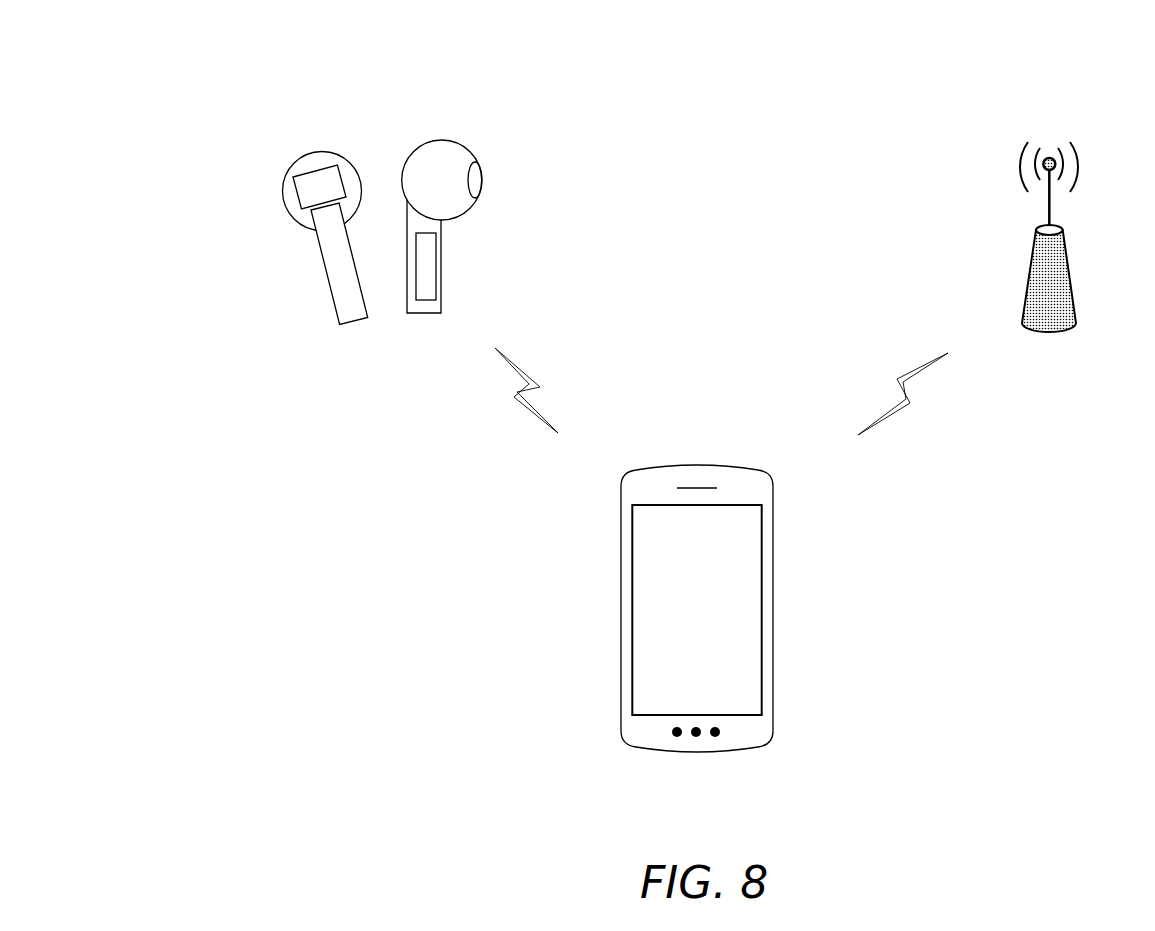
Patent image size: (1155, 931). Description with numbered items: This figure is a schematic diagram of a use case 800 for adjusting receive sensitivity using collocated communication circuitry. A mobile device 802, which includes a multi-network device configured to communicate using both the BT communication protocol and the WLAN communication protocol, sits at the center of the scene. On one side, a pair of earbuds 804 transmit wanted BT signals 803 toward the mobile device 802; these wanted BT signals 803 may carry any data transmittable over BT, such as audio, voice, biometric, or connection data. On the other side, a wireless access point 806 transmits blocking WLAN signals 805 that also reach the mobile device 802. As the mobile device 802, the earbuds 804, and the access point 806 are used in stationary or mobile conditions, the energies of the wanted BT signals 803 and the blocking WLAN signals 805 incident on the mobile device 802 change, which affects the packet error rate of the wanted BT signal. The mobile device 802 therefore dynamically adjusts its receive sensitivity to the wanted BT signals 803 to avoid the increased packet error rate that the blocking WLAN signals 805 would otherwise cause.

The wireless communication environment 800 is at (168, 56).
The mobile device 802 is at (773, 600).
The wanted BT signals 803 is at (515, 395).
The earbuds 804 is at (478, 162).
The blocking WLAN signals 805 is at (910, 404).
The wireless access point 806 is at (1070, 273).